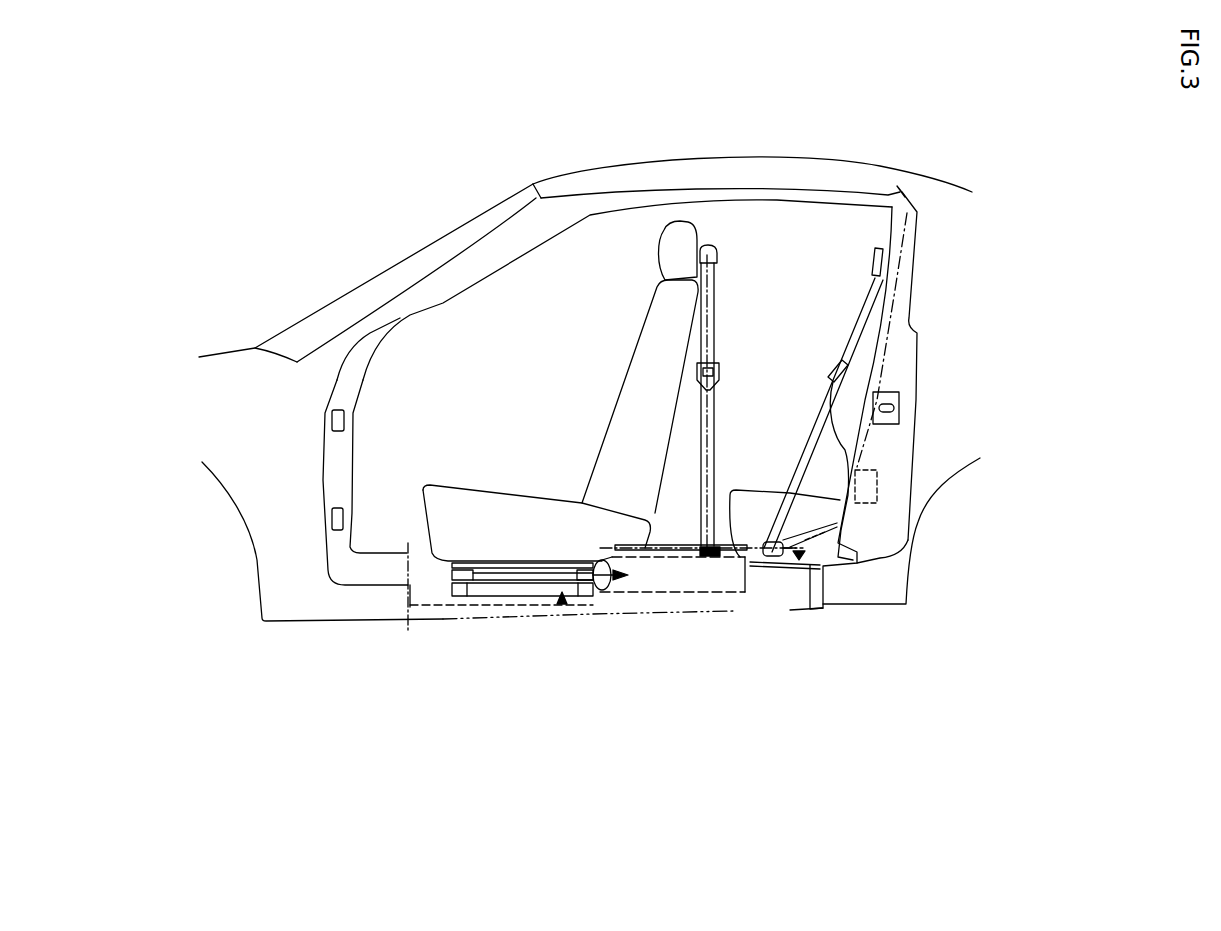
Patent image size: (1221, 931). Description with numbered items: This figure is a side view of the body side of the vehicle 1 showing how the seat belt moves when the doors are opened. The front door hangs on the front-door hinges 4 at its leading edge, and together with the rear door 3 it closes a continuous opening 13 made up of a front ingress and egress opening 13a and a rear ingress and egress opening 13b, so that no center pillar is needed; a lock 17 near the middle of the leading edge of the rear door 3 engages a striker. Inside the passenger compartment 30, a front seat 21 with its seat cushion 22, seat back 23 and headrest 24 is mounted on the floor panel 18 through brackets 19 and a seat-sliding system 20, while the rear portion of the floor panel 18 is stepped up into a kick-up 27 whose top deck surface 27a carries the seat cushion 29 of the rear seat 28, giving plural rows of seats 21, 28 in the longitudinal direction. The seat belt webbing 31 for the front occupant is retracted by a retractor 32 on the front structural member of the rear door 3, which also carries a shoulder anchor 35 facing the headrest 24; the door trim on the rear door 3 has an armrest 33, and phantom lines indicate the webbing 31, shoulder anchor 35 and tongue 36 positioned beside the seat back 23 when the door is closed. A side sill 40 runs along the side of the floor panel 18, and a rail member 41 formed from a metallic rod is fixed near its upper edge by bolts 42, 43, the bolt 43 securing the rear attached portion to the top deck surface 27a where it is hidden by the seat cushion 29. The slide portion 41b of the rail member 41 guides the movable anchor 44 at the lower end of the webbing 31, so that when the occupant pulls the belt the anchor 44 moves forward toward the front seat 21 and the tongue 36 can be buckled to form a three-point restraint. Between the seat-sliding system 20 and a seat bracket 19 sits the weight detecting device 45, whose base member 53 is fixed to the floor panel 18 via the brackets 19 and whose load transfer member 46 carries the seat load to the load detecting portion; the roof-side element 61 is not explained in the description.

The vehicle 1 is at (571, 150).
The rear door 3 is at (917, 345).
The front-door hinges 4 is at (330, 418).
The continuous opening 13 is at (753, 209).
The front ingress and egress opening 13a is at (443, 303).
The rear ingress and egress opening 13b is at (818, 209).
The lock 17 is at (895, 393).
The floor panel 18 is at (528, 606).
The brackets 19 is at (455, 597).
The seat-sliding system 20 is at (512, 563).
The front seat 21 is at (560, 391).
The seat cushion 22 is at (490, 484).
The seat back 23 is at (628, 363).
The headrest 24 is at (662, 252).
The kick-up 27 is at (745, 593).
The top deck surface 27a is at (813, 611).
The rear seat 28 is at (820, 492).
The seat cushion 29 is at (718, 488).
The passenger compartment 30 is at (751, 322).
The seat belt webbing 31 is at (850, 343).
The retractor 32 is at (878, 480).
The armrest 33 is at (830, 380).
The shoulder anchor 35 is at (872, 260).
The tongue 36 is at (828, 368).
The side sill 40 is at (365, 610).
The rail member 41 is at (673, 546).
The slide portion 41b is at (692, 560).
The bolt 42 is at (628, 582).
The bolt 43 is at (803, 545).
The anchor 44 is at (782, 558).
The weight detecting device 45 is at (563, 606).
The load transfer member 46 is at (467, 568).
The base member 53 is at (500, 590).
The roof panel 61 is at (682, 162).